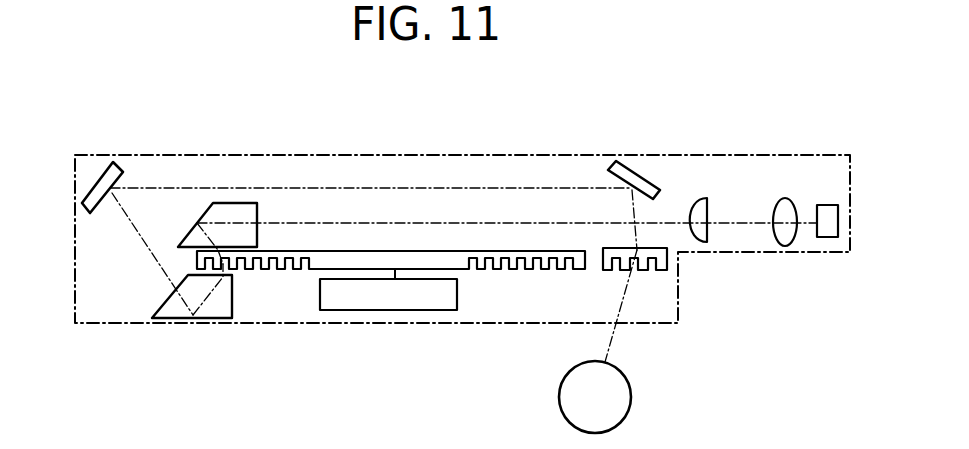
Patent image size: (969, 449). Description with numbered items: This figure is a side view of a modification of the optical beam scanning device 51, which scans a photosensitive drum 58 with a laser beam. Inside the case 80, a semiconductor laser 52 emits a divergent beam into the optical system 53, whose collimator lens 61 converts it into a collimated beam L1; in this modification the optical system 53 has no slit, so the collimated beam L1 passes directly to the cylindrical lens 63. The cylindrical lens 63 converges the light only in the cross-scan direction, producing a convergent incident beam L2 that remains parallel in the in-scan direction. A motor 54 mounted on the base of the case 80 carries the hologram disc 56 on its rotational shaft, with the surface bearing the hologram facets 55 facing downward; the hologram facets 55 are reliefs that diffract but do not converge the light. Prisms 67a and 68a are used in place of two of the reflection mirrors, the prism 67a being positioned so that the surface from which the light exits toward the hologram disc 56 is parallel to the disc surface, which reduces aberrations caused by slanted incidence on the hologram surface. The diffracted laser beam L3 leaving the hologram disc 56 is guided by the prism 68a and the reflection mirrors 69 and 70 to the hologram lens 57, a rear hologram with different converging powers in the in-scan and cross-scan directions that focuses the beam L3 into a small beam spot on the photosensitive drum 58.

The optical beam scanning device 51 is at (220, 110).
The semiconductor laser 52 is at (832, 231).
The optical system 53 is at (746, 272).
The motor 54 is at (395, 311).
The hologram facets 55 is at (277, 270).
The hologram disc 56 is at (391, 240).
The hologram lens 57 is at (658, 271).
The photosensitive drum 58 is at (618, 390).
The collimator lens 61 is at (788, 253).
The cylindrical lens 63 is at (707, 245).
The prism 67a is at (210, 205).
The prism 68a is at (215, 310).
The reflection mirror 69 is at (96, 183).
The reflection mirror 70 is at (637, 170).
The case 80 is at (127, 324).
The collimated beam L1 is at (722, 222).
The convergent incident beam L2 is at (445, 223).
The diffracted laser beam L3 is at (522, 187).